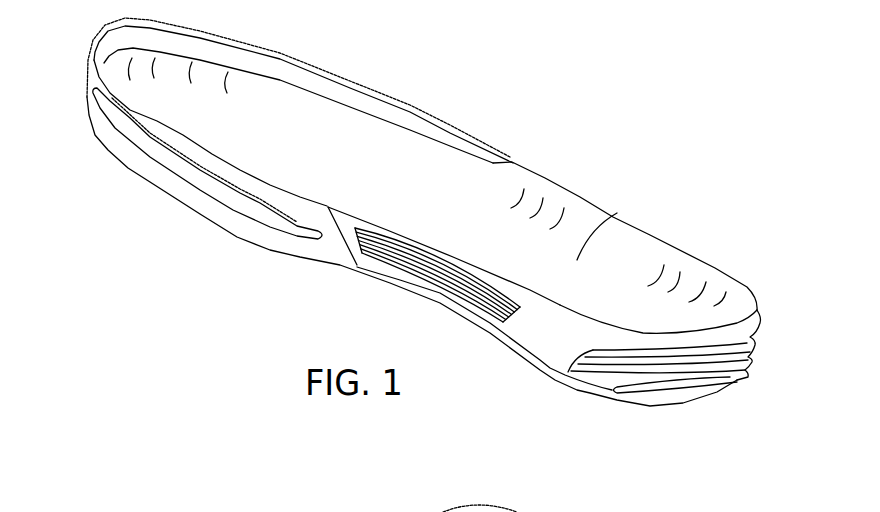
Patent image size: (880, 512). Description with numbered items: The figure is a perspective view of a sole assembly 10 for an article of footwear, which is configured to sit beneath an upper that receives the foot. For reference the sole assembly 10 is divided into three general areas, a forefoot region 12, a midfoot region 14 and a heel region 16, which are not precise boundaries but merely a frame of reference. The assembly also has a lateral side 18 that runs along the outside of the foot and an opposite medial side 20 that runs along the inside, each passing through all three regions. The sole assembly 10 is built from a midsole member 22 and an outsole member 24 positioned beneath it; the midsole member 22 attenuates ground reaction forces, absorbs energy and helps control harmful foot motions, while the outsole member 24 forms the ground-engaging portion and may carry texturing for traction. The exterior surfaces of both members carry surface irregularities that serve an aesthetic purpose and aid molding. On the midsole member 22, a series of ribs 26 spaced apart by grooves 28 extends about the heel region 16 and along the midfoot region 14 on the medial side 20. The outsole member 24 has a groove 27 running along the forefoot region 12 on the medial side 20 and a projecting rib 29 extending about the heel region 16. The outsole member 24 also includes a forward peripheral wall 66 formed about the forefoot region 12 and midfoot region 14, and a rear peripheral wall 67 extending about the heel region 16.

The sole assembly 10 is at (436, 230).
The forefoot region 12 is at (195, 124).
The midfoot region 14 is at (387, 193).
The heel region 16 is at (607, 297).
The lateral side 18 is at (542, 174).
The medial side 20 is at (237, 230).
The midsole member 22 is at (614, 217).
The outsole member 24 is at (152, 178).
The ribs 26 is at (500, 290).
The groove 27 is at (290, 227).
The grooves 28 is at (507, 302).
The rib 29 is at (650, 400).
The forward peripheral wall 66 is at (297, 76).
The rear peripheral wall 67 is at (633, 387).